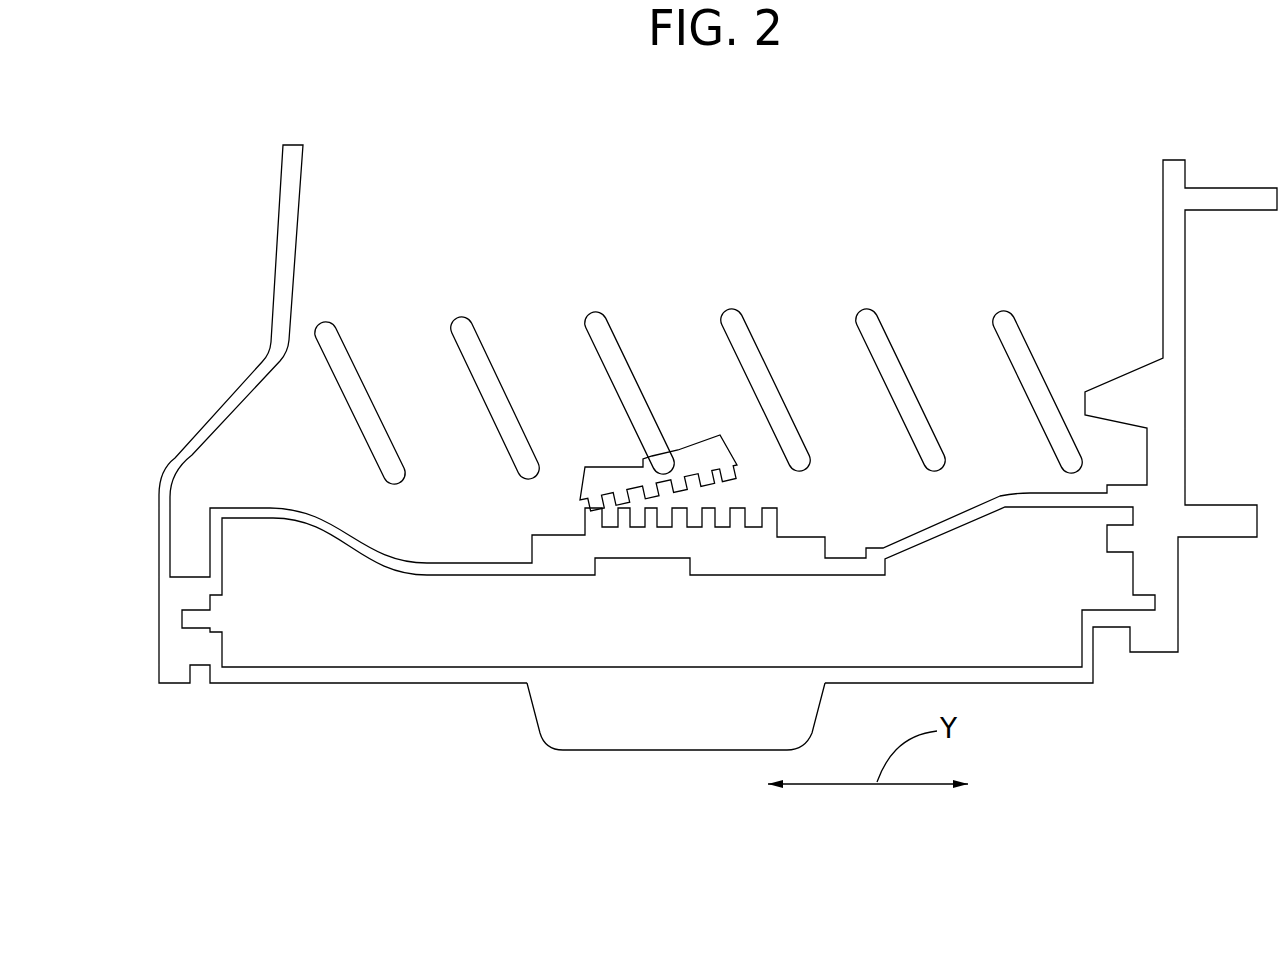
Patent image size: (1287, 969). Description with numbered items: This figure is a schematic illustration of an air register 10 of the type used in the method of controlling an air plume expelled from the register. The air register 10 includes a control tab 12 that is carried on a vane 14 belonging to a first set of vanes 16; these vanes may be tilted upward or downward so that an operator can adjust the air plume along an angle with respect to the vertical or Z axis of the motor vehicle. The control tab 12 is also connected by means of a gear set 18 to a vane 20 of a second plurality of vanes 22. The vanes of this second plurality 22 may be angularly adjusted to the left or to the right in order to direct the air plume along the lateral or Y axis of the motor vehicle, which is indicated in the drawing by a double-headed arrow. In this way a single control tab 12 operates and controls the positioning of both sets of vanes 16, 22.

The air register 10 is at (198, 227).
The control tab 12 is at (618, 730).
The vane 14 is at (283, 677).
The first set of vanes 16 is at (397, 647).
The gear set 18 is at (745, 485).
The vane 20 is at (625, 378).
The second plurality of vanes 22 is at (355, 375).